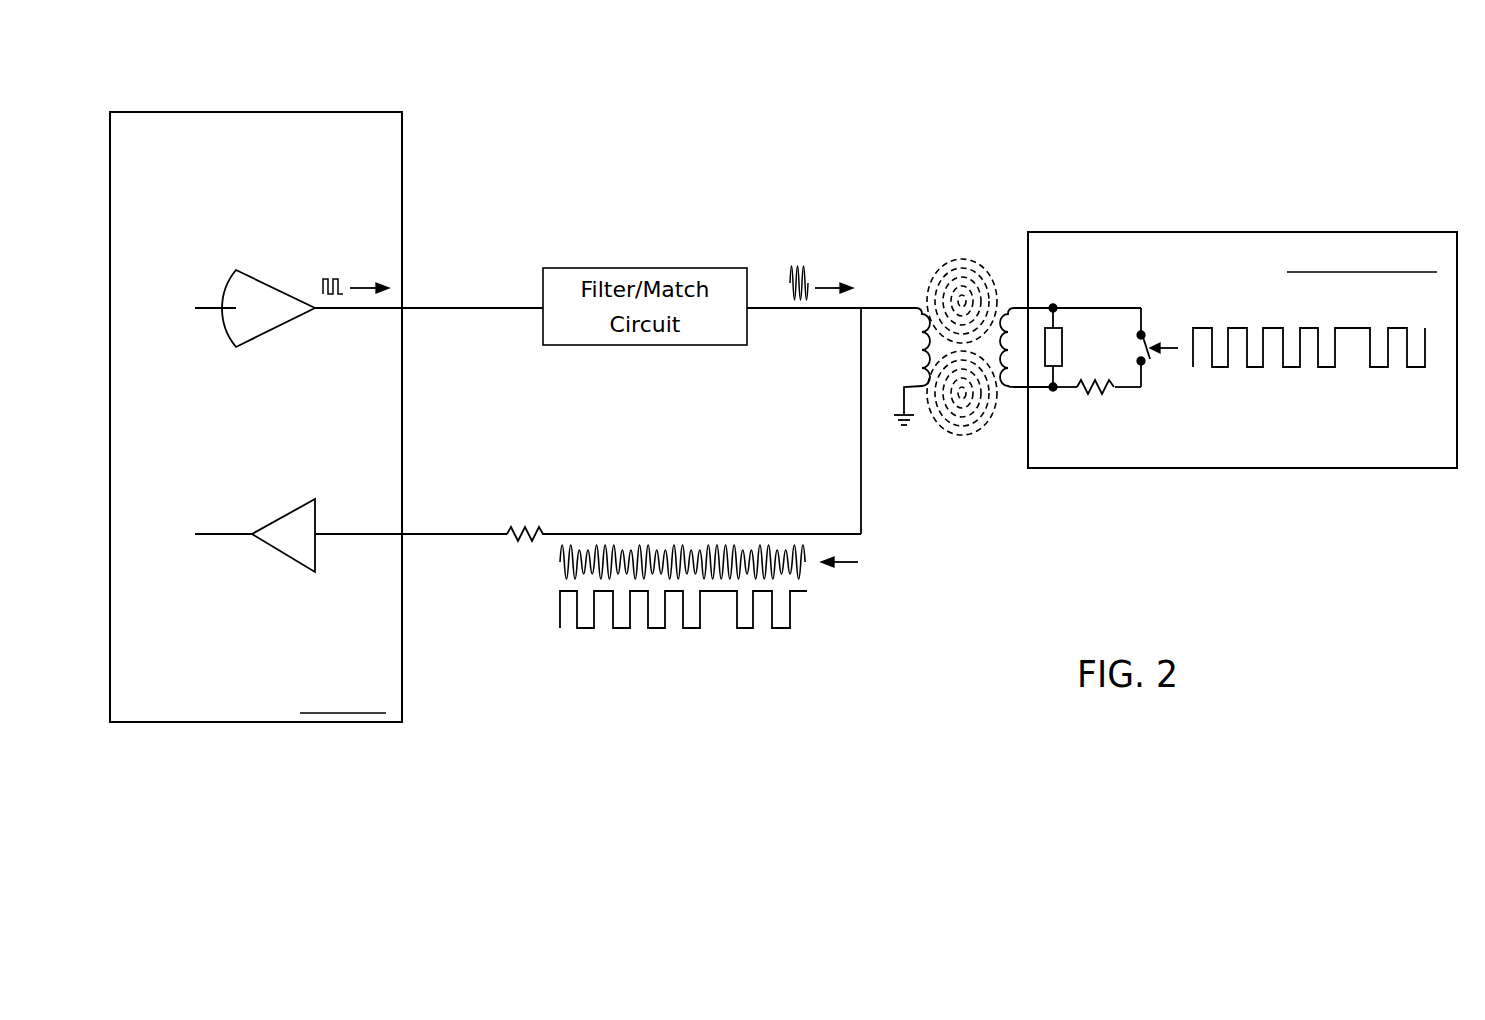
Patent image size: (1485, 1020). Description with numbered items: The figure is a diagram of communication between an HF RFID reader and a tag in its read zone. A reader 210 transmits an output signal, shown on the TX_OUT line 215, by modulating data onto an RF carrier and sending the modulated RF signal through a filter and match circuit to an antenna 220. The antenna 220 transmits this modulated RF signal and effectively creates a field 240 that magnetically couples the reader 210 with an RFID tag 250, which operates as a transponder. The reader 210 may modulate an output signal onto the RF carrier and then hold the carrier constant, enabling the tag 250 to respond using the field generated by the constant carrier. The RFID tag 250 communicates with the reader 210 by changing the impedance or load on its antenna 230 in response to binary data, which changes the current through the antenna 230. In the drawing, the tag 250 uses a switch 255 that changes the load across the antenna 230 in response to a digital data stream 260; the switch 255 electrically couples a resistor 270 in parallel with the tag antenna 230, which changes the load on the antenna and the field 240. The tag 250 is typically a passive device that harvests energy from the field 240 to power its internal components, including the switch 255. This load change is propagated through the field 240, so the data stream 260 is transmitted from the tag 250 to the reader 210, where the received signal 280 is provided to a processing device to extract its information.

The reader 210 is at (216, 706).
The transmit output line TX_OUT 215 is at (450, 302).
The antenna 220 is at (908, 322).
The antenna 230 is at (1012, 385).
The field 240 is at (970, 262).
The RFID tag 250 is at (1243, 233).
The switch 255 is at (1150, 340).
The digital data stream 260 is at (1330, 380).
The resistor 270 is at (1093, 398).
The received signal 280 is at (600, 628).